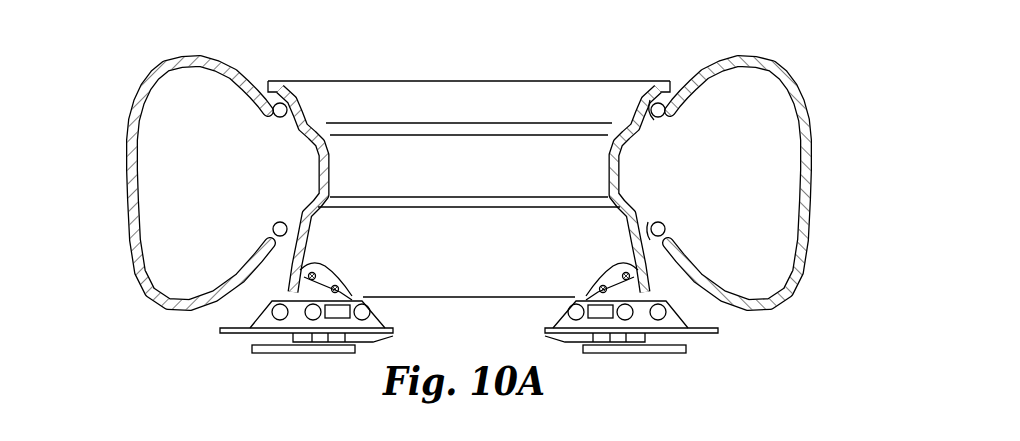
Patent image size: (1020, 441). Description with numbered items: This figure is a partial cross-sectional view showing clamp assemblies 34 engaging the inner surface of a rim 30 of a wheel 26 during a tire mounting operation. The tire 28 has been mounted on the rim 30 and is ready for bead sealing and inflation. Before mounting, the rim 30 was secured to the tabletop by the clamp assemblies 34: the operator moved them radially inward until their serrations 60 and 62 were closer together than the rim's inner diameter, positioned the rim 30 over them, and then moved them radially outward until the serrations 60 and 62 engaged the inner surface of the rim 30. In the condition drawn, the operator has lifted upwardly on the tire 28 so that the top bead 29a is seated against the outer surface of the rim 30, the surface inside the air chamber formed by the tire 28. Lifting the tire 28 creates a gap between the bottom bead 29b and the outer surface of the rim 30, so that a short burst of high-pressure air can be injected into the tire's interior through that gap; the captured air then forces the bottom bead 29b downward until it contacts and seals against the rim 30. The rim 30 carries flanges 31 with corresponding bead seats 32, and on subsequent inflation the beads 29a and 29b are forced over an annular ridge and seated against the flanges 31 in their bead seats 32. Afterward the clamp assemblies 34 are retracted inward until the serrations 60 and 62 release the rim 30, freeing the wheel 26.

The wheel 26 is at (529, 69).
The tire 28 is at (125, 182).
The top bead 29a is at (661, 116).
The bottom bead 29b is at (660, 222).
The rim 30 is at (481, 273).
The flanges 31 is at (673, 76).
The bead seats 32 is at (238, 67).
The clamp assemblies 34 is at (265, 375).
The serrations 60 is at (637, 269).
The serrations 62 is at (301, 269).